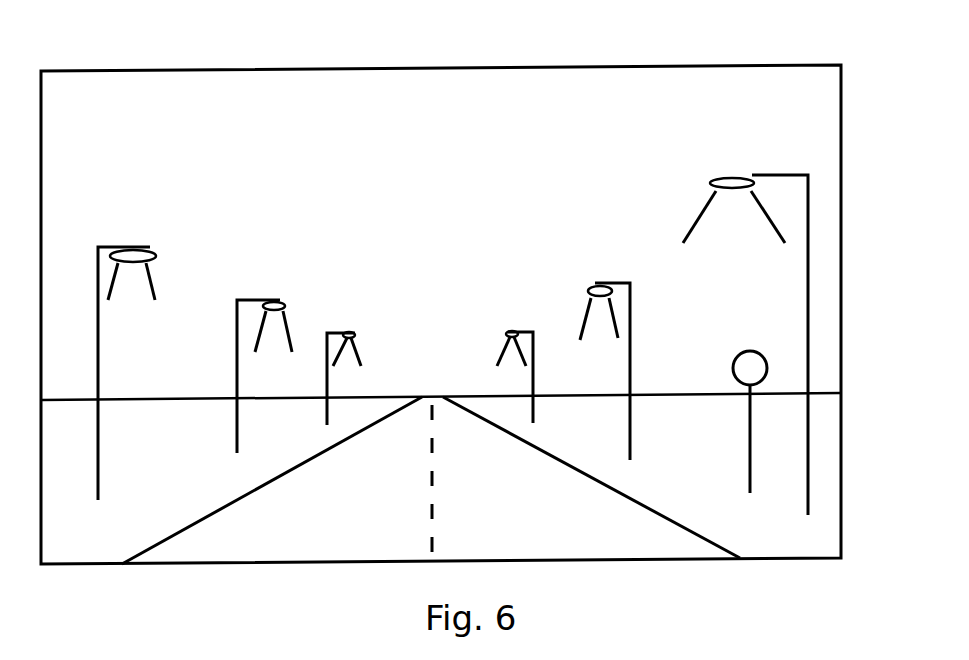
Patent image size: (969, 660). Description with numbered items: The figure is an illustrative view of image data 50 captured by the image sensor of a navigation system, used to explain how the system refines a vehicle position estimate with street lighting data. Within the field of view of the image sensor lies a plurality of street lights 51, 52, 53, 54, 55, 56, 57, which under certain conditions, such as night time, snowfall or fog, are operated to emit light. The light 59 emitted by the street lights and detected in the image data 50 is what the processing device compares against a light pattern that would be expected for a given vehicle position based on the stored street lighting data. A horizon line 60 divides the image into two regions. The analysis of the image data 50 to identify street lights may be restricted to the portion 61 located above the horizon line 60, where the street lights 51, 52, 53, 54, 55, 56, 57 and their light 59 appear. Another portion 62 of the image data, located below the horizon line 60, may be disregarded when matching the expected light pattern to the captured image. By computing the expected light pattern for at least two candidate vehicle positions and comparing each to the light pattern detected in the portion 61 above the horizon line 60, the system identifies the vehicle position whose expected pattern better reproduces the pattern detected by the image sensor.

The image data 50 is at (148, 63).
The street light 51 is at (149, 249).
The street light 52 is at (279, 300).
The street light 53 is at (351, 334).
The street light 54 is at (712, 178).
The street light 55 is at (739, 355).
The street light 56 is at (592, 285).
The street light 57 is at (509, 333).
The light 59 is at (141, 311).
The horizon line 60 is at (394, 396).
The portion 61 is at (857, 65).
The portion 62 is at (857, 400).